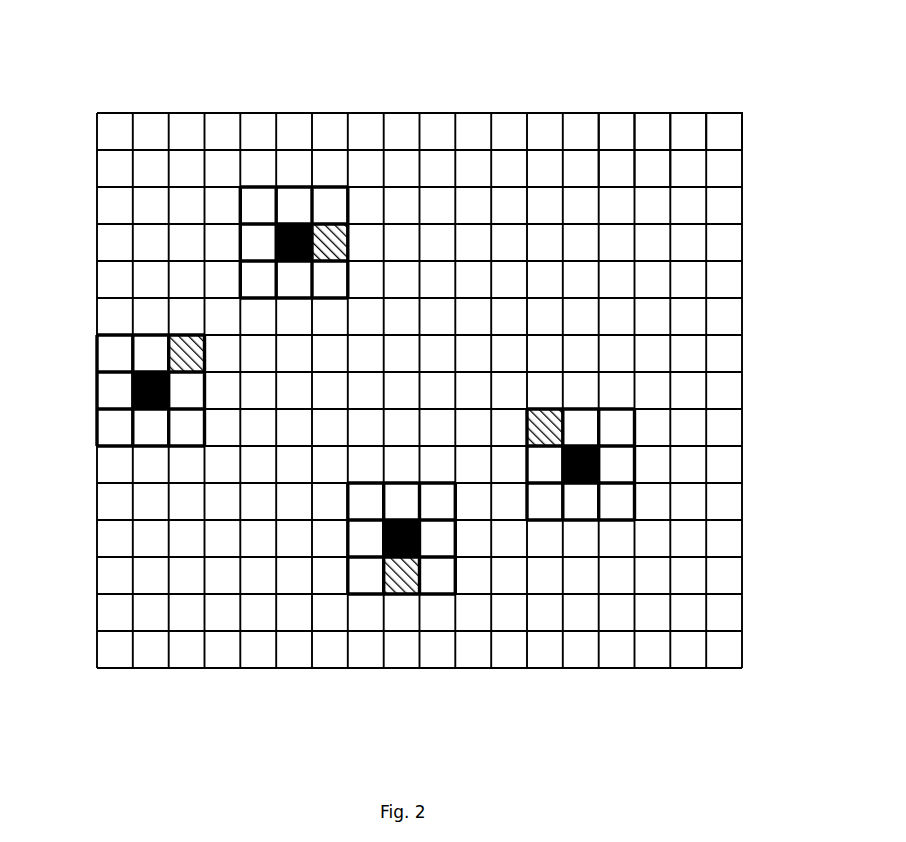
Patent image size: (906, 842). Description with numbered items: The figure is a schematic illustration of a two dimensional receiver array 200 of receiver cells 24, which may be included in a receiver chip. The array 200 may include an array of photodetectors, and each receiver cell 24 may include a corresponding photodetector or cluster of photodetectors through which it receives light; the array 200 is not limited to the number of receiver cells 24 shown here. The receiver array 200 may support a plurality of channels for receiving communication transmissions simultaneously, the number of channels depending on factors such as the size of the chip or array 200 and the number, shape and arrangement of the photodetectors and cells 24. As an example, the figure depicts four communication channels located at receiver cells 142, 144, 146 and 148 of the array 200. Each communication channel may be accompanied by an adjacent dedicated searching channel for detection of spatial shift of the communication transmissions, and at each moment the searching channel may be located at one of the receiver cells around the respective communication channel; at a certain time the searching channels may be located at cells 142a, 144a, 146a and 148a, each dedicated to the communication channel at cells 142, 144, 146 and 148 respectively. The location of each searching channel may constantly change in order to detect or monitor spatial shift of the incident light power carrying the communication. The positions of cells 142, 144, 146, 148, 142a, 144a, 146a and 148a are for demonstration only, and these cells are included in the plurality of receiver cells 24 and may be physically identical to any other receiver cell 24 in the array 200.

The two dimensional receiver array 200 is at (626, 40).
The receiver cell 24 is at (725, 137).
The receiver cell 142 is at (290, 223).
The receiver cell 142a is at (340, 223).
The receiver cell 144 is at (130, 392).
The receiver cell 144a is at (168, 354).
The receiver cell 146 is at (380, 550).
The receiver cell 146a is at (400, 597).
The receiver cell 148 is at (600, 457).
The receiver cell 148a is at (567, 422).